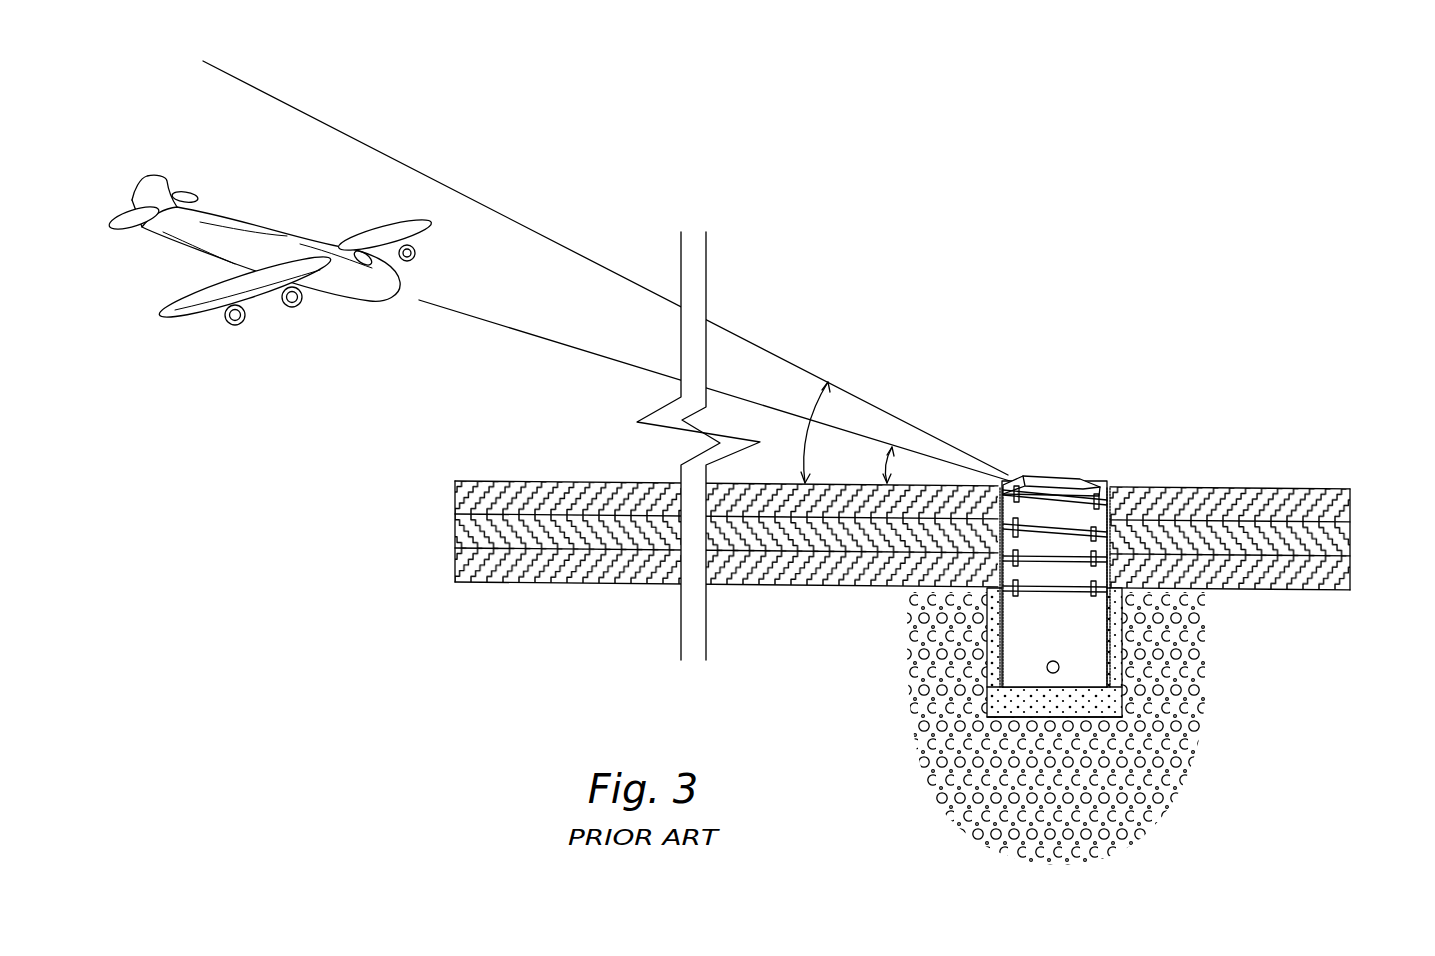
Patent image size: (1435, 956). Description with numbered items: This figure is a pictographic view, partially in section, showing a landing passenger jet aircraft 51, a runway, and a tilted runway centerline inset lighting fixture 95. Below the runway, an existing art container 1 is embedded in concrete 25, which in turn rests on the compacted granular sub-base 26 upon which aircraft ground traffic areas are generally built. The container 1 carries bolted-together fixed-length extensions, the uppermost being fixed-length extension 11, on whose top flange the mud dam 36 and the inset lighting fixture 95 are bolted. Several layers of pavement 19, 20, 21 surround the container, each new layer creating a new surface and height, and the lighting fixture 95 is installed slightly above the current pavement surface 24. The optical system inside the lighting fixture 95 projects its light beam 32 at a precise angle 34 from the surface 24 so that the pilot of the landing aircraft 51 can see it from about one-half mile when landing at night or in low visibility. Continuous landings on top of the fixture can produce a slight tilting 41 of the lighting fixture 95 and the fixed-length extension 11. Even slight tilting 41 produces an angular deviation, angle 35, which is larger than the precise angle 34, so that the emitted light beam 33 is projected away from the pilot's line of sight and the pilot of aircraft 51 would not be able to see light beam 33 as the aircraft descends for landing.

The container 1 is at (1103, 562).
The fixed-length extension 11 is at (1076, 478).
The layer of pavement 19 is at (1353, 570).
The layer of pavement 20 is at (1353, 538).
The layer of pavement 21 is at (1353, 500).
The pavement surface 24 is at (945, 533).
The concrete 25 is at (1120, 695).
The compacted granular sub-base 26 is at (1167, 800).
The light beam 32 is at (607, 355).
The emitted light beam 33 is at (418, 167).
The precise angle 34 is at (880, 462).
The angle 35 is at (808, 402).
The mud dam 36 is at (1110, 490).
The tilting 41 is at (997, 522).
The aircraft 51 is at (313, 228).
The inset lighting fixture 95 is at (1094, 482).